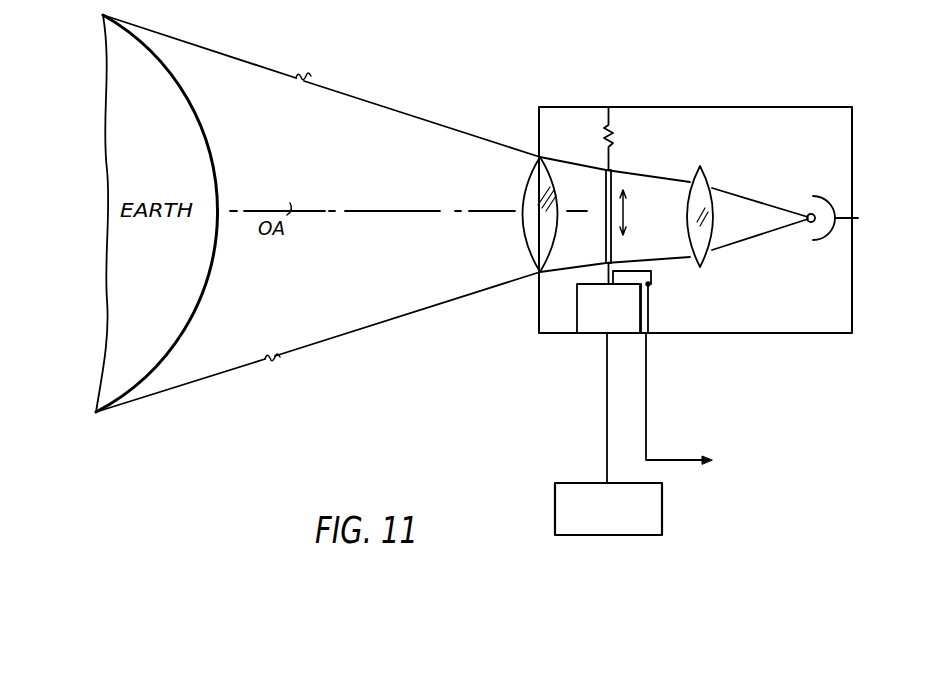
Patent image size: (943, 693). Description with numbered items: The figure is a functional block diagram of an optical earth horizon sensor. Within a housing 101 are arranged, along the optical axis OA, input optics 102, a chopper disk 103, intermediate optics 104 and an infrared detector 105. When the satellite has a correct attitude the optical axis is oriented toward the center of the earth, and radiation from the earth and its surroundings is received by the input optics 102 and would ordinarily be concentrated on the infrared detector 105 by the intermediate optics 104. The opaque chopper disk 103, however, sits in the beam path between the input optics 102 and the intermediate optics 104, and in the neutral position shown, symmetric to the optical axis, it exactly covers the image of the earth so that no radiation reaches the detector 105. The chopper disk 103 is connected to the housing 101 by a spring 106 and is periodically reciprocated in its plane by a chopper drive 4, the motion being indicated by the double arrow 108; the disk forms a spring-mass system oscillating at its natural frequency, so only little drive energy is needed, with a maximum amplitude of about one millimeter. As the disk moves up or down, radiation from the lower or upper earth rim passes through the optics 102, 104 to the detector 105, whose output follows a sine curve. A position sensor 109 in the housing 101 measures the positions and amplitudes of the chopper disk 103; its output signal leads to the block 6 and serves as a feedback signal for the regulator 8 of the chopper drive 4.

The housing 101 is at (755, 107).
The input optics 102 is at (531, 185).
The chopper disk 103 is at (606, 170).
The intermediate optics 104 is at (703, 166).
The infrared detector 105 is at (838, 285).
The spring 106 is at (606, 131).
The double arrow 108 is at (625, 219).
The position sensor 109 is at (648, 284).
The chopper drive 4 is at (590, 323).
The regulator 8 is at (555, 488).
The block 6 is at (703, 404).